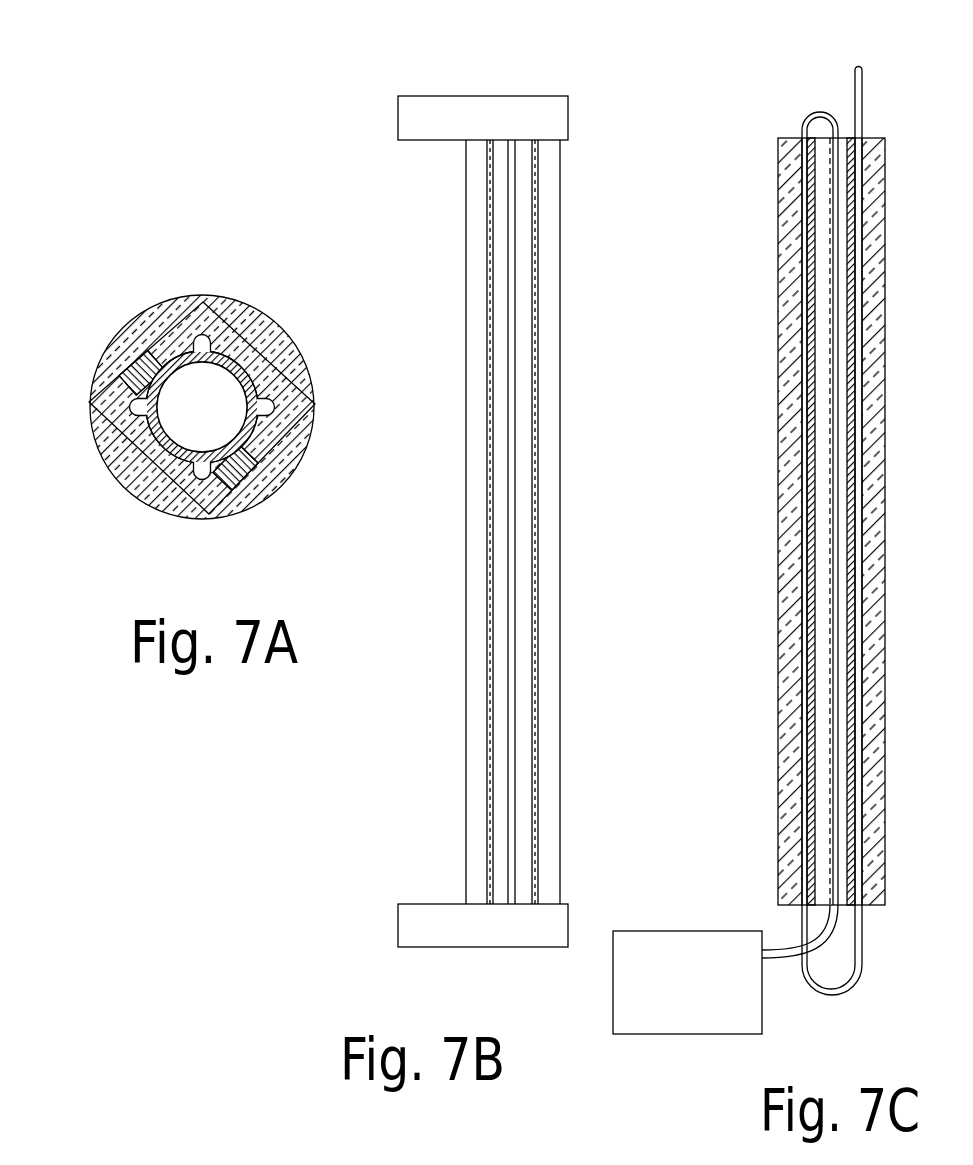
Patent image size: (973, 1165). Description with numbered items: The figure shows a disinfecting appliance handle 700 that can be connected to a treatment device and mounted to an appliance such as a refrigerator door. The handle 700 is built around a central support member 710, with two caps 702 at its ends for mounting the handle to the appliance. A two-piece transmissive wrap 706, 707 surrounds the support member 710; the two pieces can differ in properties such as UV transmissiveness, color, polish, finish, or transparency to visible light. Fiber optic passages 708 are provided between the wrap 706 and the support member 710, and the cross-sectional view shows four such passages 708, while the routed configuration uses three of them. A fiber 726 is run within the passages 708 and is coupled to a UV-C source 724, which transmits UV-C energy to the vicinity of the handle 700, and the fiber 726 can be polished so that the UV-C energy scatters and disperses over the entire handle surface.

In FIG. 7B, the disinfecting appliance handle 700 is at (526, 483).
In FIG. 7C, the disinfecting appliance handle 700 is at (779, 529).
In FIG. 7B, the cap 702 is at (555, 108).
In FIG. 7A, the transmissive wrap piece 706 is at (132, 492).
In FIG. 7B, the transmissive wrap piece 706 is at (560, 169).
In FIG. 7C, the transmissive wrap piece 706 is at (885, 176).
In FIG. 7A, the transmissive wrap piece 707 is at (254, 310).
In FIG. 7A, the fiber optic passage 708 is at (199, 340).
In FIG. 7A, the support member 710 is at (256, 427).
In FIG. 7B, the support member 710 is at (538, 212).
In FIG. 7C, the UV-C source 724 is at (650, 931).
In FIG. 7B, the fiber 726 is at (512, 310).
In FIG. 7C, the fiber 726 is at (680, 235).